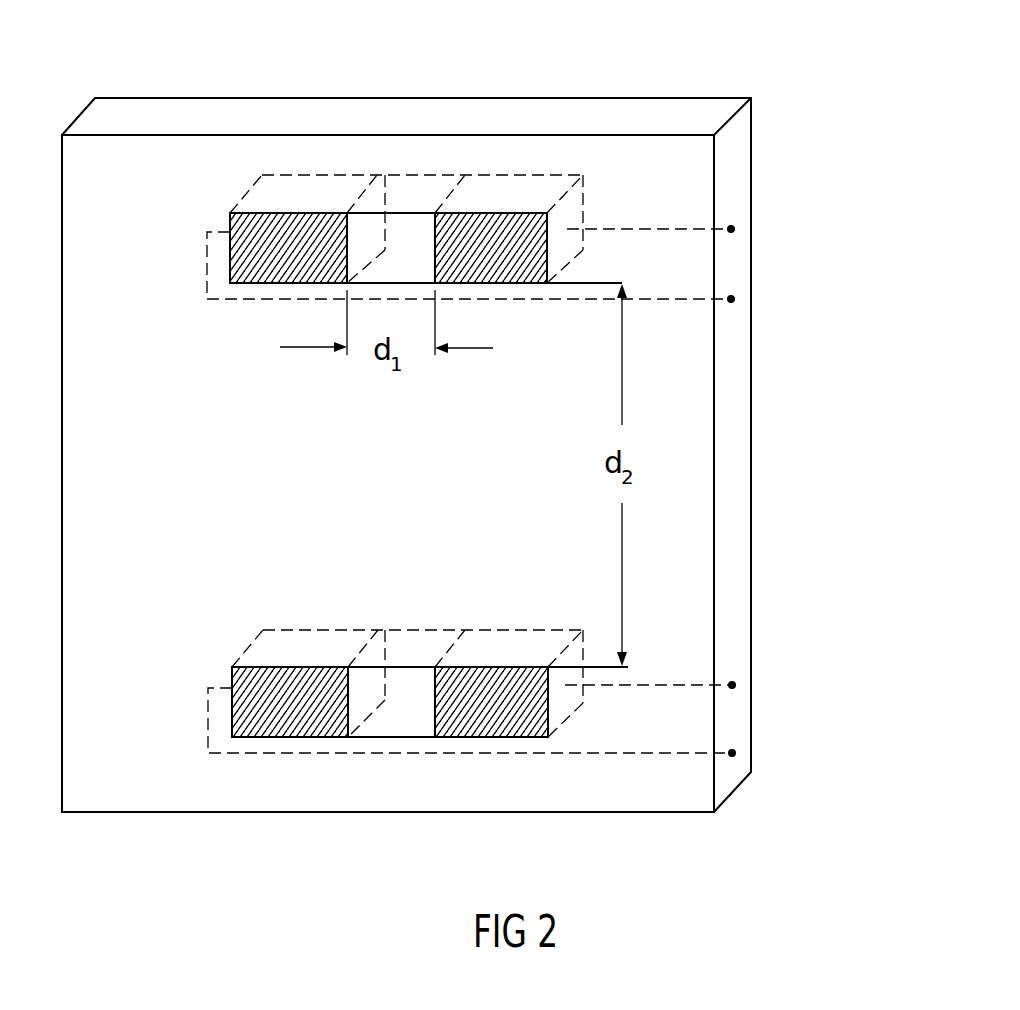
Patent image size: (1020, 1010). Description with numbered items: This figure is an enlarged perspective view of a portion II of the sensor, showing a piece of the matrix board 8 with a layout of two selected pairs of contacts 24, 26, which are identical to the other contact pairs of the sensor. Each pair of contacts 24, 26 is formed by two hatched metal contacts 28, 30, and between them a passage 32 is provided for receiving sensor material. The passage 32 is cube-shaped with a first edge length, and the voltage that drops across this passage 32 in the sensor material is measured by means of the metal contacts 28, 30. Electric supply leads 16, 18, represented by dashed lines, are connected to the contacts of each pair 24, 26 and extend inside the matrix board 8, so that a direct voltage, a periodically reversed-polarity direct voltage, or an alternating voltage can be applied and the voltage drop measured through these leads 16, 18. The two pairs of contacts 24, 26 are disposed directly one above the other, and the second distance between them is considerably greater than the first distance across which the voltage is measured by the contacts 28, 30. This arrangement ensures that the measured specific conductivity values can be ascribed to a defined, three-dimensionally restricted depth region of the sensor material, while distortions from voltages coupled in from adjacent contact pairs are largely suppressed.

The matrix board 8 is at (677, 537).
The electric supply lead 16 is at (670, 300).
The electric supply lead 18 is at (645, 228).
The pair of contacts 24 is at (232, 200).
The pair of contacts 26 is at (233, 648).
The metal contact 28 is at (266, 272).
The metal contact 30 is at (500, 275).
The passage 32 is at (398, 225).
The portion II is at (768, 430).